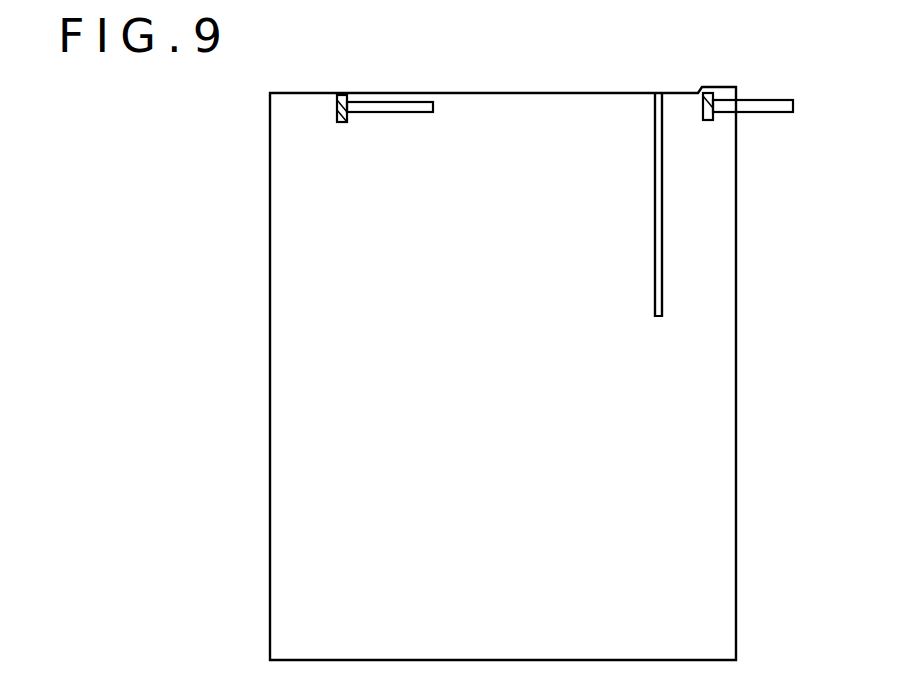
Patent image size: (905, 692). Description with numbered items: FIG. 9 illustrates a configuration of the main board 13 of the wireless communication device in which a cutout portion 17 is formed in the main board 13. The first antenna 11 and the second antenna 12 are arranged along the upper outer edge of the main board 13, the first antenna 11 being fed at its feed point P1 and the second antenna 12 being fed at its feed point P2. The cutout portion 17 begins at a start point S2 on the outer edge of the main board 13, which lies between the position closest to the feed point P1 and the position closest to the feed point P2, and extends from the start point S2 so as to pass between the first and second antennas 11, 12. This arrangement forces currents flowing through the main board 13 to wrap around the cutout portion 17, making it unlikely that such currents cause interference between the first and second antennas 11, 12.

The main board 13 is at (737, 622).
The cutout portion 17 is at (662, 282).
The start point S2 is at (657, 92).
The feed point P1 is at (336, 108).
The first antenna 11 is at (403, 102).
The feed point P2 is at (713, 118).
The second antenna 12 is at (772, 100).